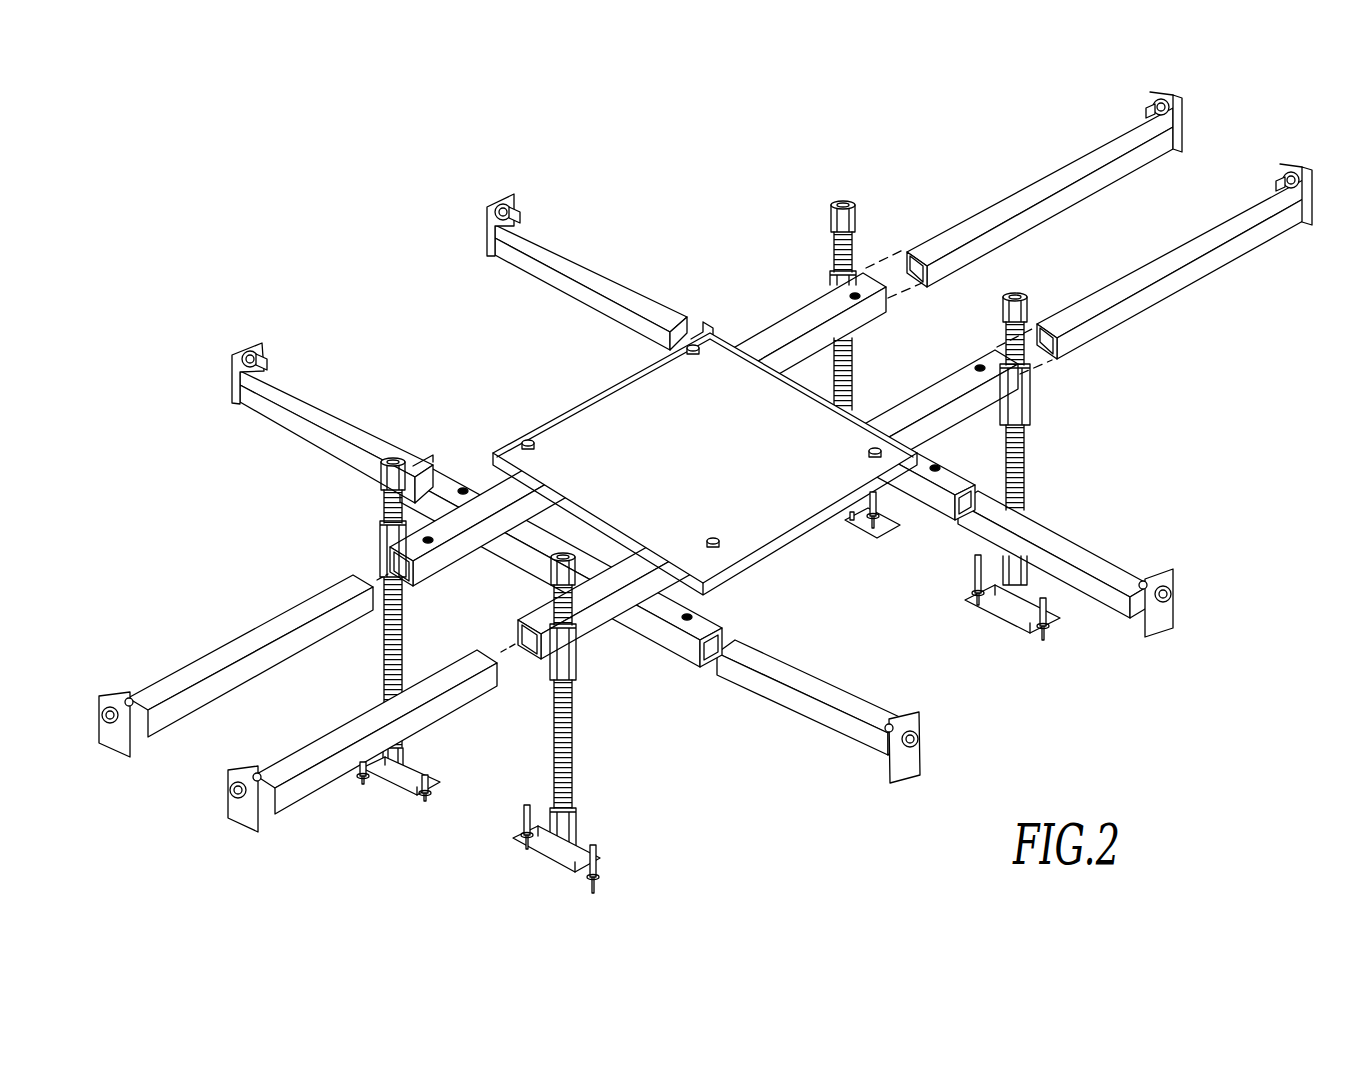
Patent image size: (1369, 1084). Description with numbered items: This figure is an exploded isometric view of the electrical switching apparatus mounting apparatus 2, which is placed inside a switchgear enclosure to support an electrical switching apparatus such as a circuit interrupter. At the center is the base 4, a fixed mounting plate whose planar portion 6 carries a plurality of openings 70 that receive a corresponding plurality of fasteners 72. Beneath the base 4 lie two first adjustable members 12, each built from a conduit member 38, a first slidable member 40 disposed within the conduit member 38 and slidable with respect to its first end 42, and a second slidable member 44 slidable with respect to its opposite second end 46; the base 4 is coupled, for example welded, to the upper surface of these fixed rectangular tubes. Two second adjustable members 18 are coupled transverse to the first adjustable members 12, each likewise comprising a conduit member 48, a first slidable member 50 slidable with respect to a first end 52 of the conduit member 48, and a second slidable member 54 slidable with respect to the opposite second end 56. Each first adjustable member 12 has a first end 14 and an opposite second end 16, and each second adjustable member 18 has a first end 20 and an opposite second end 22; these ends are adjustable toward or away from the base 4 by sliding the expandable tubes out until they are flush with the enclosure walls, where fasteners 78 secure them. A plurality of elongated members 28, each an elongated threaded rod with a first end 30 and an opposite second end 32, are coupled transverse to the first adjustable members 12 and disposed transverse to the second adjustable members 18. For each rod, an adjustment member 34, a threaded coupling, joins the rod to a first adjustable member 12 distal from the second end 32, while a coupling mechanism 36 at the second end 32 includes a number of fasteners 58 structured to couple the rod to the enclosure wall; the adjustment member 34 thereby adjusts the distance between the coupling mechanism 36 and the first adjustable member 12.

The electrical switching apparatus mounting apparatus 2 is at (919, 659).
The base 4 is at (705, 464).
The planar portion 6 is at (630, 386).
The first adjustable member 12 is at (670, 511).
The first end 14 is at (1183, 113).
The opposite second end 16 is at (110, 748).
The second adjustable member 18 is at (693, 676).
The first end 20 is at (1168, 621).
The opposite second end 22 is at (231, 376).
The elongated member 28 is at (826, 231).
The first end 30 is at (845, 207).
The opposite second end 32 is at (396, 786).
The adjustment member 34 is at (858, 270).
The coupling mechanism 36 is at (718, 709).
The conduit member 38 is at (790, 332).
The first slidable member 40 is at (1082, 157).
The first end 42 is at (880, 292).
The second slidable member 44 is at (178, 679).
The opposite second end 46 is at (389, 562).
The conduit member 48 is at (680, 612).
The first slidable member 50 is at (818, 692).
The first end 52 is at (724, 634).
The second slidable member 54 is at (313, 401).
The opposite second end 56 is at (703, 320).
The fastener 58 is at (362, 783).
The opening 70 is at (535, 449).
The fastener 72 is at (528, 438).
The fastener 78 is at (99, 719).